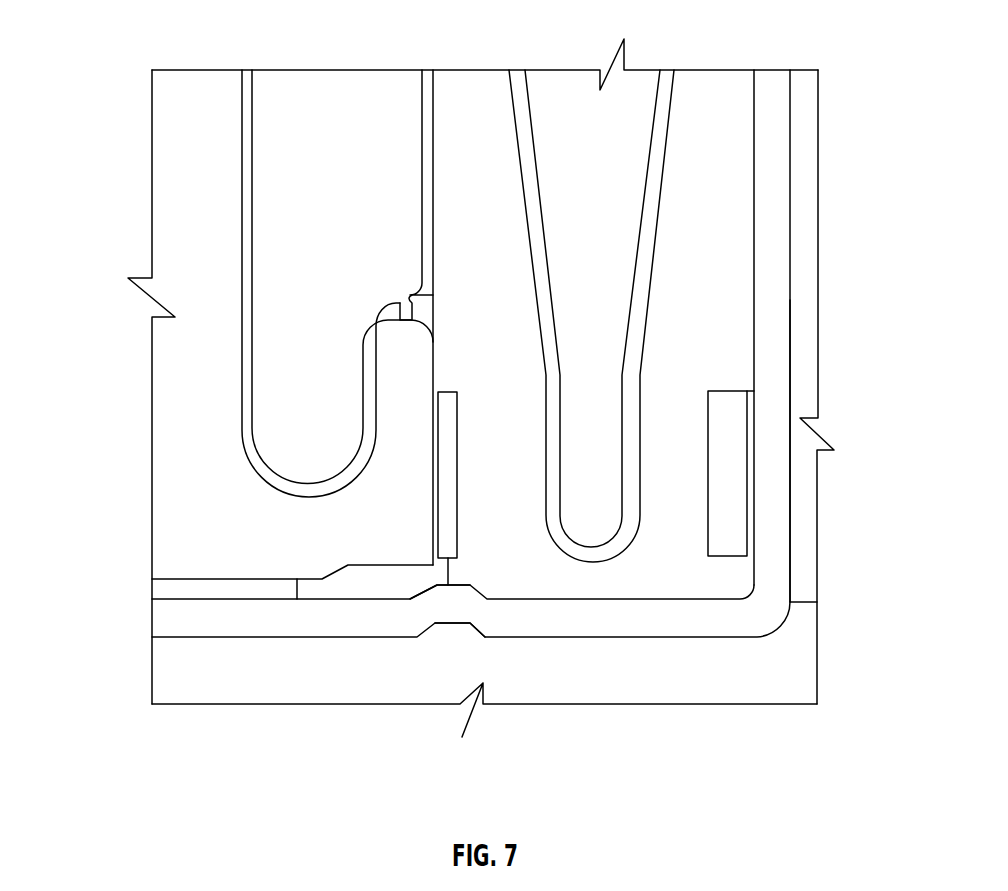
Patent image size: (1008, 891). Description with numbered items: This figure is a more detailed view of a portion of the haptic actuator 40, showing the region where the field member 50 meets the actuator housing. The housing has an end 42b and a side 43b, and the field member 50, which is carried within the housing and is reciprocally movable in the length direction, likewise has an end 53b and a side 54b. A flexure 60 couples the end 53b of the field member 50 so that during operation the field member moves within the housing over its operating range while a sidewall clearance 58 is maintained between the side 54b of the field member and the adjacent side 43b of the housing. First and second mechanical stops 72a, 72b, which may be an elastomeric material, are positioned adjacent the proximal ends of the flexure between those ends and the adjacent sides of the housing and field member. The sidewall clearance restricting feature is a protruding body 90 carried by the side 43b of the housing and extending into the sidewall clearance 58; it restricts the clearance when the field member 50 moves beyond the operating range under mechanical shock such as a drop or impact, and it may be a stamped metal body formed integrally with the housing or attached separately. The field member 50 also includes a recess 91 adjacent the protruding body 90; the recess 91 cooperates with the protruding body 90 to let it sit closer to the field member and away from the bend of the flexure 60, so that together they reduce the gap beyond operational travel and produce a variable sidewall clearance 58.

The haptic actuator 40 is at (821, 222).
The end of actuator housing 42b is at (819, 382).
The side of actuator housing 43b is at (220, 707).
The field member 50 is at (173, 448).
The end of field member 53b is at (434, 213).
The side of field member 54b is at (228, 579).
The sidewall clearance 58 is at (323, 589).
The flexure 60 is at (613, 557).
The first mechanical stop 72a is at (452, 505).
The second mechanical stop 72b is at (727, 550).
The protruding body 90 is at (443, 603).
The recess 91 is at (407, 573).